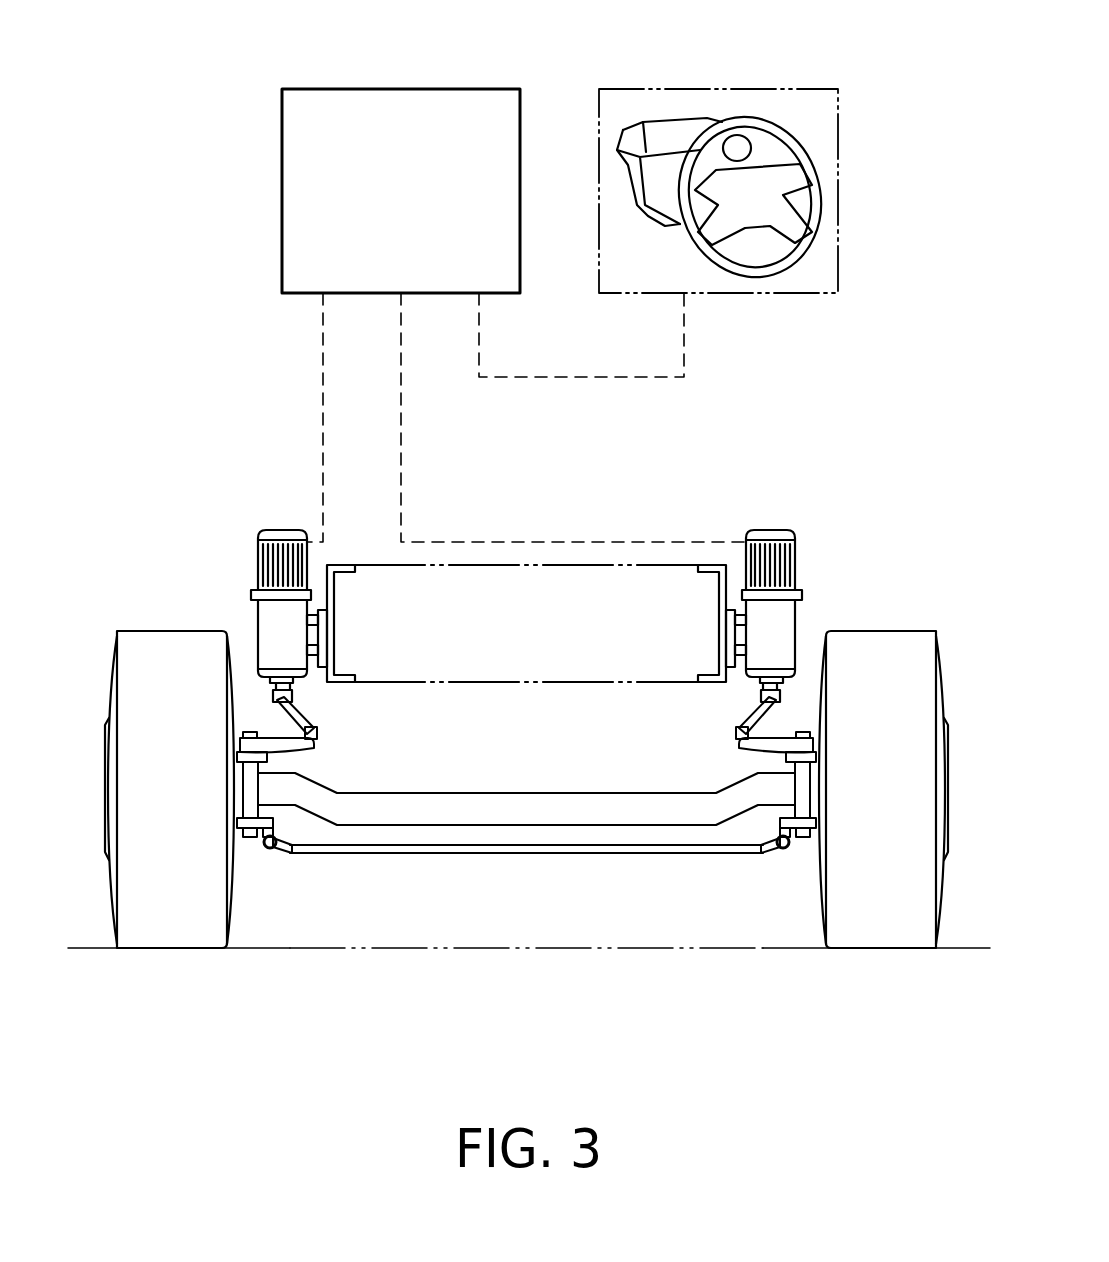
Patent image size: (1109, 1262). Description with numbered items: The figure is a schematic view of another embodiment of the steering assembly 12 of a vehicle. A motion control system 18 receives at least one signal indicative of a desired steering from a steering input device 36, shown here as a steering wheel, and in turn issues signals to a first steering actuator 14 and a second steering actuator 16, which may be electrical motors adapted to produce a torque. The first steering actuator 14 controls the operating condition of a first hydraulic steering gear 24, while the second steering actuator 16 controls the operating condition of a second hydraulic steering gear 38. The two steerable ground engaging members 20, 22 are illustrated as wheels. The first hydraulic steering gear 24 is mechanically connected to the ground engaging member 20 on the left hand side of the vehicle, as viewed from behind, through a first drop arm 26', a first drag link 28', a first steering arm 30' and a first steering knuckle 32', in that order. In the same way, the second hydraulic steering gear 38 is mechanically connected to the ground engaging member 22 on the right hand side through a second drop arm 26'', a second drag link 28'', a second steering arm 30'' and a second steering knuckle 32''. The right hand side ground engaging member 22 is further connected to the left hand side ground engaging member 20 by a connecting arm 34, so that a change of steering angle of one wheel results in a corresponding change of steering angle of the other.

The steering assembly 12 is at (152, 150).
The first steering actuator 14 is at (797, 562).
The second steering actuator 16 is at (256, 562).
The motion control system 18 is at (403, 89).
The steerable ground engaging member 20 is at (918, 631).
The steerable ground engaging member 22 is at (135, 631).
The first hydraulic steering gear 24 is at (800, 625).
The second hydraulic steering gear 38 is at (255, 625).
The first drop arm 26' is at (664, 855).
The second drop arm 26'' is at (392, 855).
The first drag link 28' is at (692, 884).
The second drag link 28'' is at (363, 884).
The first steering arm 30' is at (749, 872).
The second steering arm 30'' is at (307, 872).
The first steering knuckle 32' is at (742, 893).
The second steering knuckle 32'' is at (314, 893).
The connecting arm 34 is at (545, 854).
The steering input device 36 is at (760, 89).